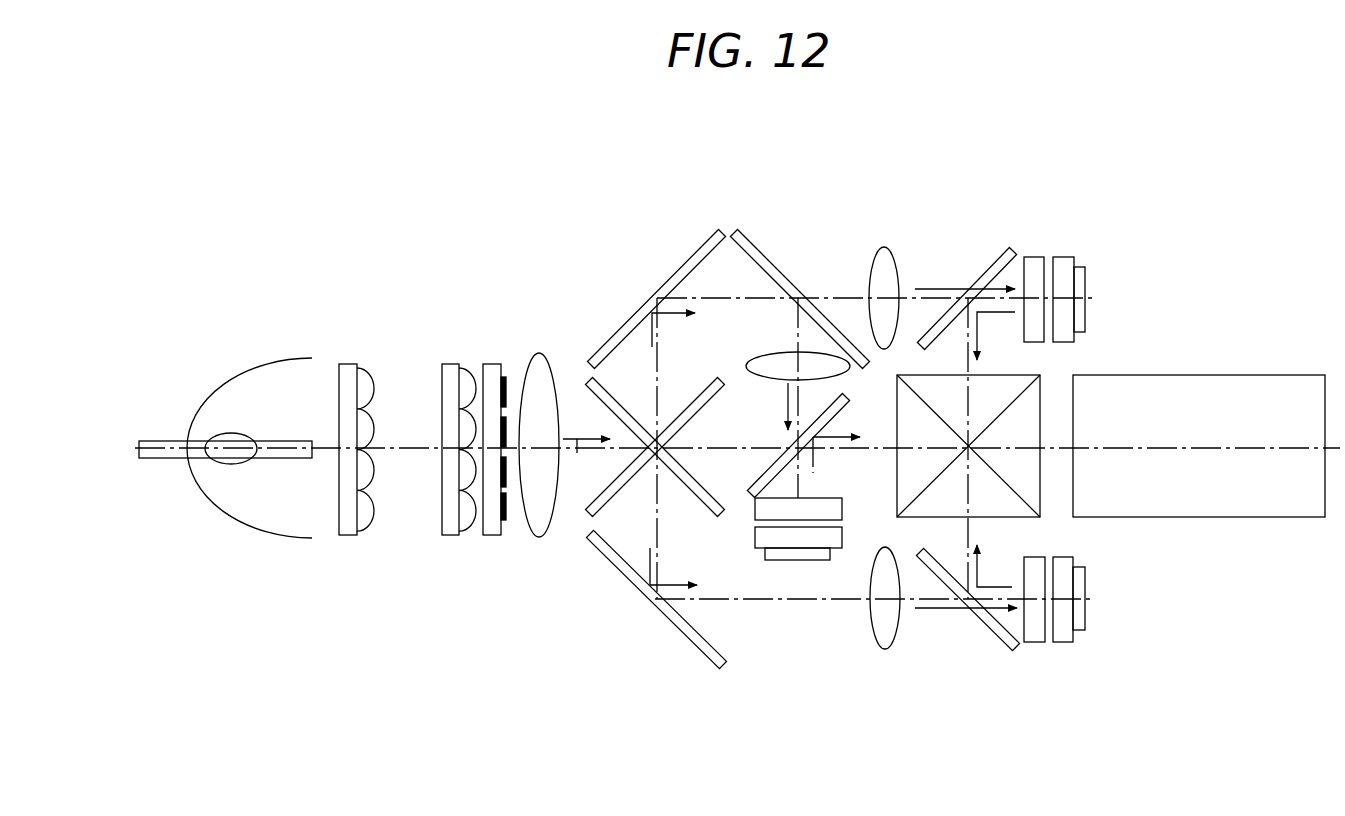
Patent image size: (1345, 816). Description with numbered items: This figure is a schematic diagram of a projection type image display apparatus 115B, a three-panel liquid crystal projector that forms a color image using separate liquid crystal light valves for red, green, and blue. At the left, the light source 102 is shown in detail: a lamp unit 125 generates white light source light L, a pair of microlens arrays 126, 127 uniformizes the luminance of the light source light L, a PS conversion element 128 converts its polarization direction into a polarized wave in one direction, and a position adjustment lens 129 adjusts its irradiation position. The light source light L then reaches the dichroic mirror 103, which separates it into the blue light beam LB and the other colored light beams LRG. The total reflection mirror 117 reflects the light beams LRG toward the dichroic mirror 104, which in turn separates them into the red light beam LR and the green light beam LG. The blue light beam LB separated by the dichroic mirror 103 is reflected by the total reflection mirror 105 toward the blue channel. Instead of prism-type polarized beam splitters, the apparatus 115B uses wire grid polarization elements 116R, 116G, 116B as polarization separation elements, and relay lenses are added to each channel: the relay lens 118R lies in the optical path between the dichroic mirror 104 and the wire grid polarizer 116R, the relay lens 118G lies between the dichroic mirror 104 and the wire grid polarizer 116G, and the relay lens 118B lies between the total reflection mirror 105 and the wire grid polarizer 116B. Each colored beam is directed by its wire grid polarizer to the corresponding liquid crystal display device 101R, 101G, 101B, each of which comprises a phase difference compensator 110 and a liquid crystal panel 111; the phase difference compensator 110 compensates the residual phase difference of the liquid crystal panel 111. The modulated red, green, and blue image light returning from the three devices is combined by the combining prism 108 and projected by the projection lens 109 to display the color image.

The projection type image display apparatus 115B is at (313, 641).
The light source 102 is at (562, 297).
The lamp unit 125 is at (283, 360).
The microlens array 126 is at (347, 364).
The microlens array 127 is at (452, 364).
The PS conversion element 128 is at (492, 364).
The position adjustment lens 129 is at (538, 355).
The dichroic mirror 103 is at (675, 428).
The total reflection mirror 117 is at (678, 270).
The dichroic mirror 104 is at (777, 268).
The total reflection mirror 105 is at (677, 630).
The relay lens 118R is at (878, 250).
The relay lens 118G is at (765, 352).
The relay lens 118B is at (877, 650).
The wire grid polarization element 116R is at (992, 268).
The wire grid polarization element 116G is at (750, 488).
The wire grid polarization element 116B is at (993, 633).
The liquid crystal display device 101R is at (1110, 199).
The liquid crystal display device 101G is at (845, 661).
The liquid crystal display device 101B is at (1108, 703).
The phase difference compensator 110 is at (755, 512).
The liquid crystal panel 111 is at (845, 545).
The combining prism 108 is at (1035, 498).
The projection lens 109 is at (1187, 509).
The light source light L is at (577, 453).
The colored light beams LRG is at (686, 340).
The red light beam LR is at (930, 287).
The green light beam LG is at (788, 404).
The blue light beam LB is at (678, 582).